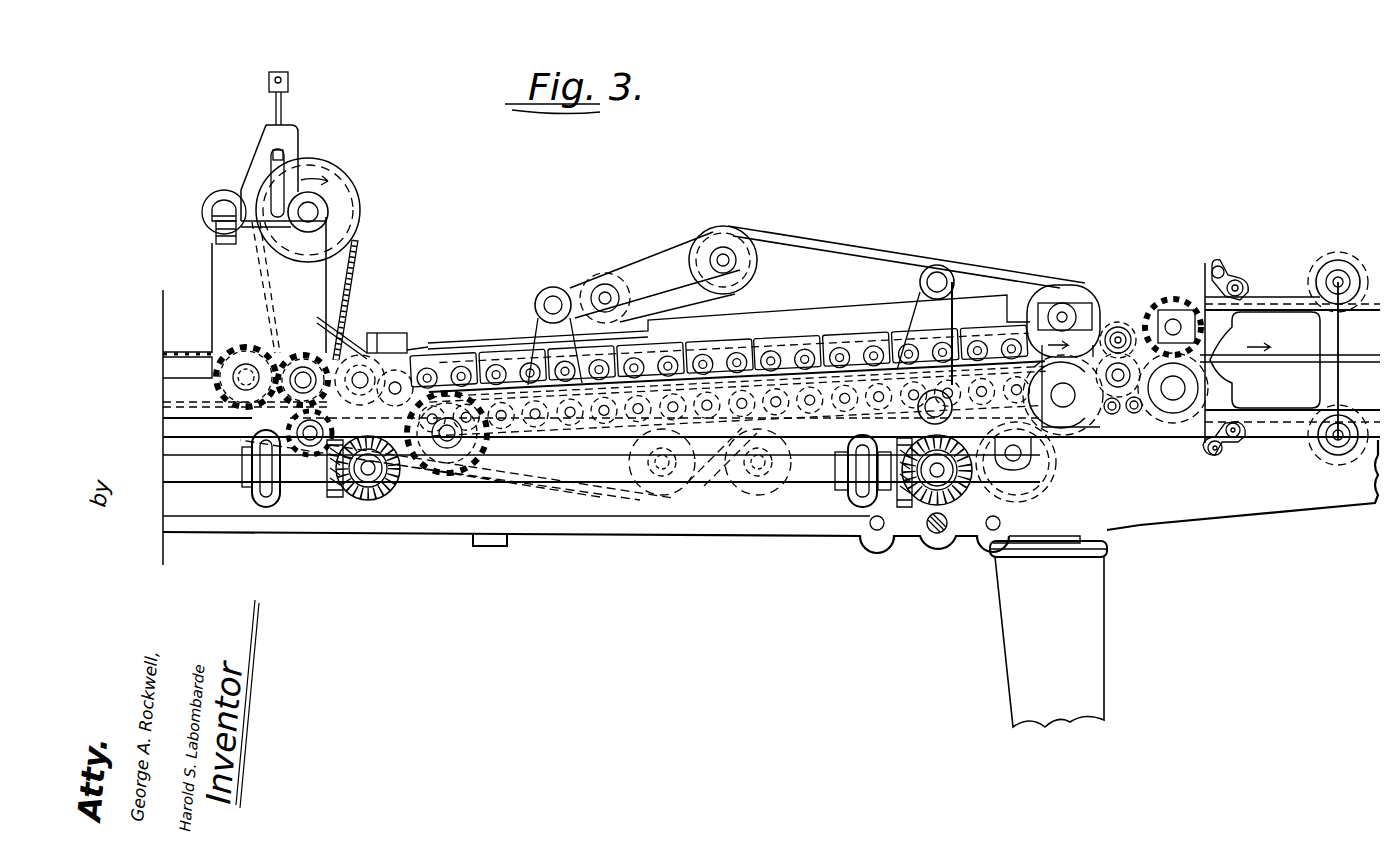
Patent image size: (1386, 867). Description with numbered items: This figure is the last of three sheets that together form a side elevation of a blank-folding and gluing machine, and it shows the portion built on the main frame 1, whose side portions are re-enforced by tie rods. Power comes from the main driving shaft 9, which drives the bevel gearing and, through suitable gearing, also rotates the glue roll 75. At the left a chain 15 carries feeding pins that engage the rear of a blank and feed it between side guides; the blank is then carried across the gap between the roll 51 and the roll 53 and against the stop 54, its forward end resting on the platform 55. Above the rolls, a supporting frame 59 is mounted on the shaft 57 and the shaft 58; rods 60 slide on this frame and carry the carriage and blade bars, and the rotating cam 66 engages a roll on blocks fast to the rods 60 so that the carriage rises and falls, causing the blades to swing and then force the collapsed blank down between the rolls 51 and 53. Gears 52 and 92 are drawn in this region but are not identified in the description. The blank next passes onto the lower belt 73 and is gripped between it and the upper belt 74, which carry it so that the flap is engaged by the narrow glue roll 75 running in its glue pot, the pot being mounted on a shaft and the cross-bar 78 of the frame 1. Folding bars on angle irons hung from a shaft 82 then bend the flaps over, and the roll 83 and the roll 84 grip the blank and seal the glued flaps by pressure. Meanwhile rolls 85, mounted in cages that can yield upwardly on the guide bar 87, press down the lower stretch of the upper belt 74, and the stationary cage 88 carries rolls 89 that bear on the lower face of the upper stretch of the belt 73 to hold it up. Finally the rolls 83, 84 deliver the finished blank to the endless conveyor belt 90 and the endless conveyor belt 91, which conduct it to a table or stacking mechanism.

The frame 1 is at (1227, 507).
The main driving shaft 9 is at (187, 463).
The chain 15 is at (177, 348).
The roll 51 is at (244, 352).
The gear 52 is at (223, 362).
The roll 53 is at (302, 355).
The stop 54 is at (357, 337).
The platform 55 is at (403, 337).
The shaft 57 is at (313, 208).
The shaft 58 is at (217, 193).
The supporting frame 59 is at (253, 164).
The rods 60 is at (283, 110).
The cam 66 is at (362, 218).
The lower belt 73 is at (603, 495).
The upper belt 74 is at (788, 238).
The glue roll 75 is at (438, 489).
The cross-bar 78 is at (488, 552).
The shaft 82 is at (937, 278).
The roll 83 is at (552, 298).
The roll 84 is at (1107, 413).
The rolls 85 is at (877, 338).
The guide bar 87 is at (750, 315).
The stationary cage 88 is at (838, 407).
The rolls 89 is at (950, 425).
The endless conveyor belt 90 is at (1277, 363).
The endless conveyor belt 91 is at (1282, 353).
The gear 92 is at (310, 458).